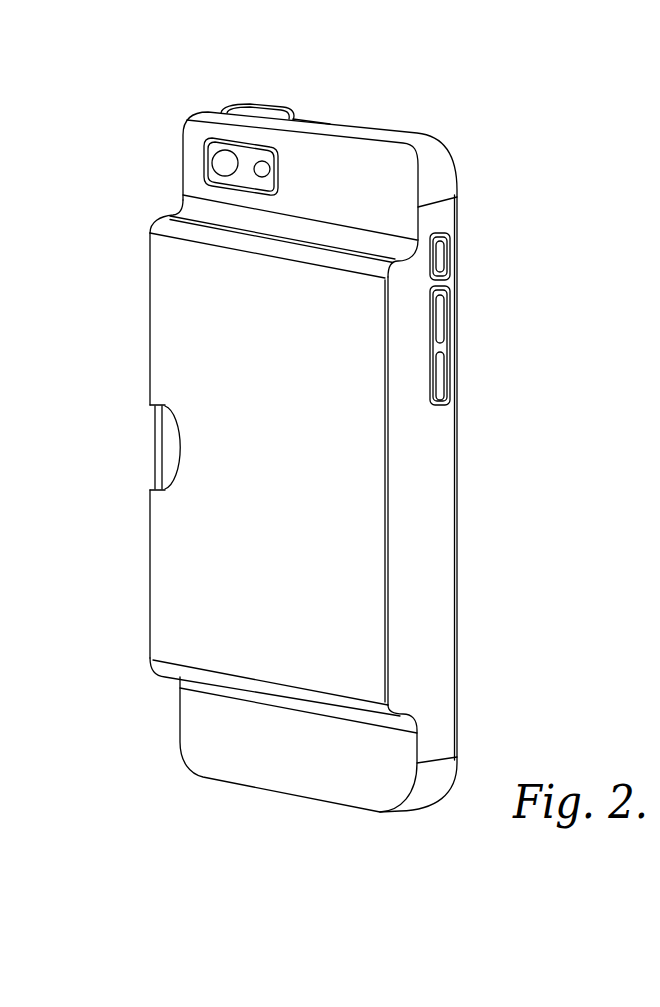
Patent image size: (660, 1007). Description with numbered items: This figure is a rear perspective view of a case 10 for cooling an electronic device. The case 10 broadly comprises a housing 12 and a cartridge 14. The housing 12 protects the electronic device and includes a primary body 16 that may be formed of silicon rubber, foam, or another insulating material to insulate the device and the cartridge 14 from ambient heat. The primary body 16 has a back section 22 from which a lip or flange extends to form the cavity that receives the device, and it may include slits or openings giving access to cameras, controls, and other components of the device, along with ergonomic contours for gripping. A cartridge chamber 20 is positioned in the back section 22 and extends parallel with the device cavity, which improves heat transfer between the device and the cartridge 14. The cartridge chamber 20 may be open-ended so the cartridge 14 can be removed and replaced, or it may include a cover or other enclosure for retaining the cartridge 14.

The case 10 is at (217, 80).
The housing 12 is at (347, 110).
The cartridge 14 is at (158, 426).
The primary body 16 is at (448, 162).
The cartridge chamber 20 is at (178, 618).
The back section 22 is at (140, 468).